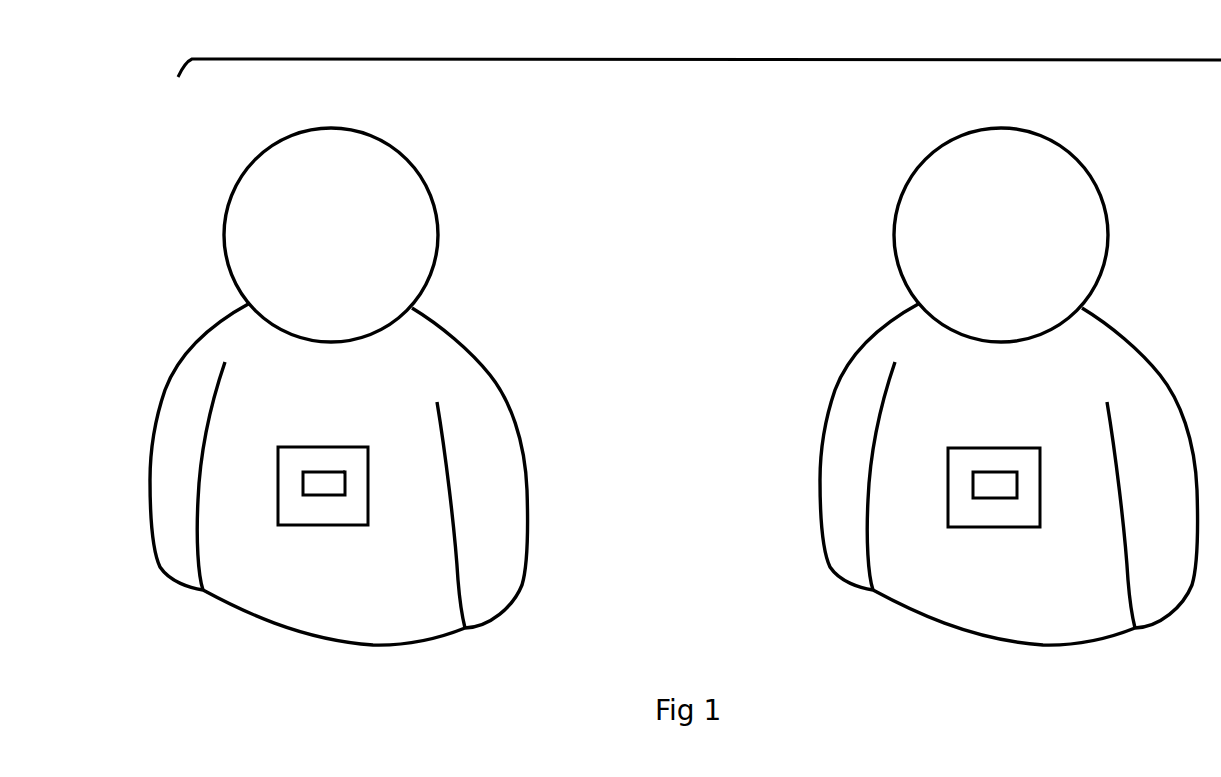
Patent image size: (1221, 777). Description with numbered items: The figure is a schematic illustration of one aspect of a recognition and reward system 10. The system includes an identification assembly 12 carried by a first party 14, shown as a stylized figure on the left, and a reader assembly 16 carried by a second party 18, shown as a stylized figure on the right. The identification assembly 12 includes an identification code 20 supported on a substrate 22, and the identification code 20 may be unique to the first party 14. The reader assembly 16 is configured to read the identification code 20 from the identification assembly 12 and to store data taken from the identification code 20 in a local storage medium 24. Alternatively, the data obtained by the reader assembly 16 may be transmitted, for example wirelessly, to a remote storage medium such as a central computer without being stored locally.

The recognition and reward system 10 is at (682, 31).
The identification assembly 12 is at (370, 485).
The first party 14 is at (440, 223).
The reader assembly 16 is at (1042, 485).
The second party 18 is at (1110, 223).
The identification code 20 is at (323, 470).
The substrate 22 is at (343, 468).
The local storage medium 24 is at (993, 470).